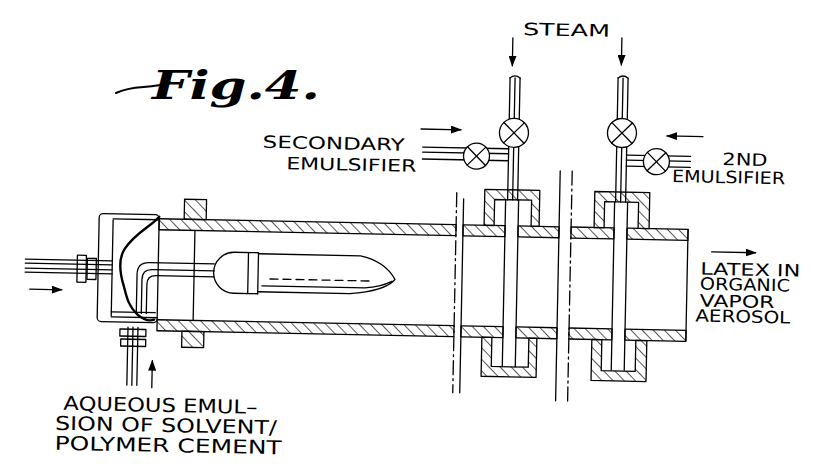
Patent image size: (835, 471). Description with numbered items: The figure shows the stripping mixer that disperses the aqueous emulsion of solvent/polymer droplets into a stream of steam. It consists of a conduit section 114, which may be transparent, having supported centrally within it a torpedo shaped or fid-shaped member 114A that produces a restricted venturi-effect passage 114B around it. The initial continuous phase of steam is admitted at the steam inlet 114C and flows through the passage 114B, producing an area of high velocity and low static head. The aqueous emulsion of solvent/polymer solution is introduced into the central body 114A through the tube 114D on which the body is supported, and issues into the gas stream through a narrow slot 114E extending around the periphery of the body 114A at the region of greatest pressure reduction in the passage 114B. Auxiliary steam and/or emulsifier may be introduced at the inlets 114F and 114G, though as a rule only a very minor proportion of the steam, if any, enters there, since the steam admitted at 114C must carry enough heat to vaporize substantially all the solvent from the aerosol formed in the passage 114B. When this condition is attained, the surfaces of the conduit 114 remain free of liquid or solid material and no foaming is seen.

The conduit section 114 is at (396, 337).
The torpedo shaped member 114A is at (378, 269).
The venturi-effect passage 114B is at (315, 235).
The steam inlet 114C is at (71, 254).
The tube 114D is at (129, 368).
The narrow slot 114E is at (255, 297).
The auxiliary steam and/or emulsifier inlet 114F is at (502, 376).
The auxiliary steam and/or emulsifier inlet 114G is at (624, 375).